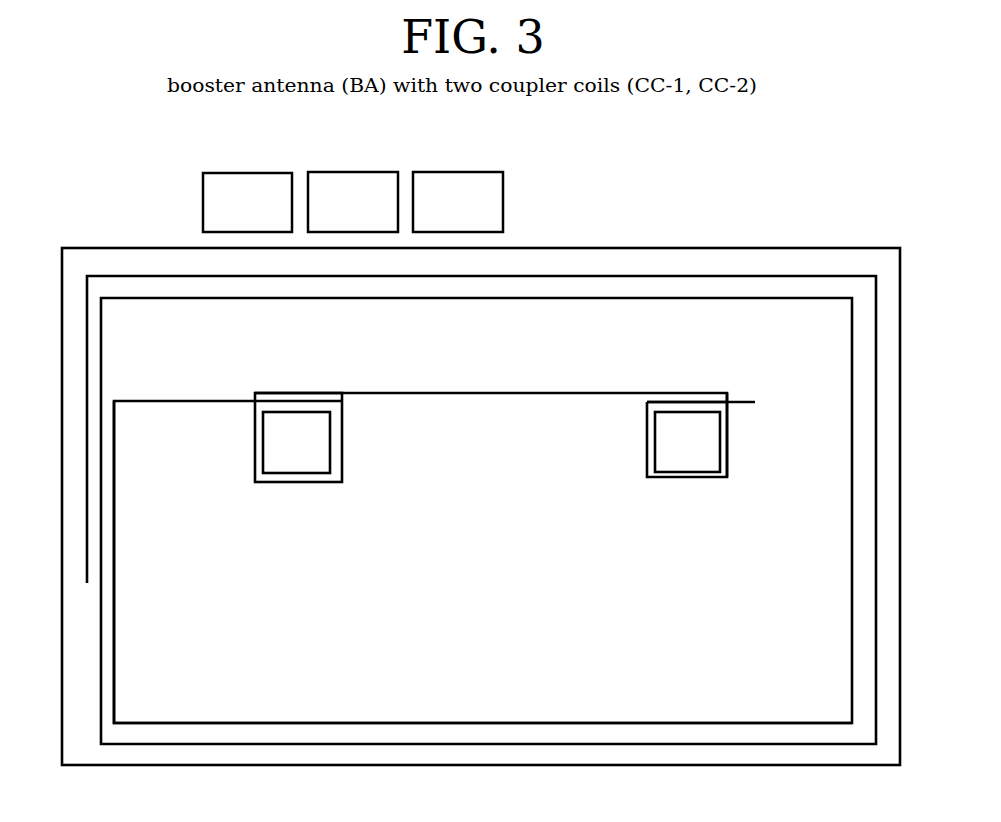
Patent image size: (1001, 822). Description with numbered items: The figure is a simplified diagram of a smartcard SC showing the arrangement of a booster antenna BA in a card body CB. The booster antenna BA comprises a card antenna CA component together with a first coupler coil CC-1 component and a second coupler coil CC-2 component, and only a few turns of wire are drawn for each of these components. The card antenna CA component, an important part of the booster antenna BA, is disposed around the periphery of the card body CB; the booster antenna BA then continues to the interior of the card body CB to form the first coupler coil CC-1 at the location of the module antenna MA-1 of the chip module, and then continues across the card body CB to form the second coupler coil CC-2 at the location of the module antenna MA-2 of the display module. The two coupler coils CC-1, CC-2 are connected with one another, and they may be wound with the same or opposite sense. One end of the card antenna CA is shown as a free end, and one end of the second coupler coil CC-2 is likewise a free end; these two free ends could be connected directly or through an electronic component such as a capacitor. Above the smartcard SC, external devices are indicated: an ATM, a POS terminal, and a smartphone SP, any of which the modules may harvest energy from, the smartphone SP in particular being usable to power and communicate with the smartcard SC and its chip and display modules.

The smartcard SC is at (121, 234).
The card antenna component CA is at (307, 305).
The booster antenna BA is at (139, 591).
The card body CB is at (479, 510).
The first coupler coil component CC-1 is at (309, 487).
The second coupler coil component CC-2 is at (669, 482).
The module antenna of the chip module MA-1 is at (296, 442).
The module antenna of the display module MA-2 is at (687, 442).
The element ATM is at (247, 202).
The POS terminal POS is at (353, 202).
The smartphone SP is at (458, 202).